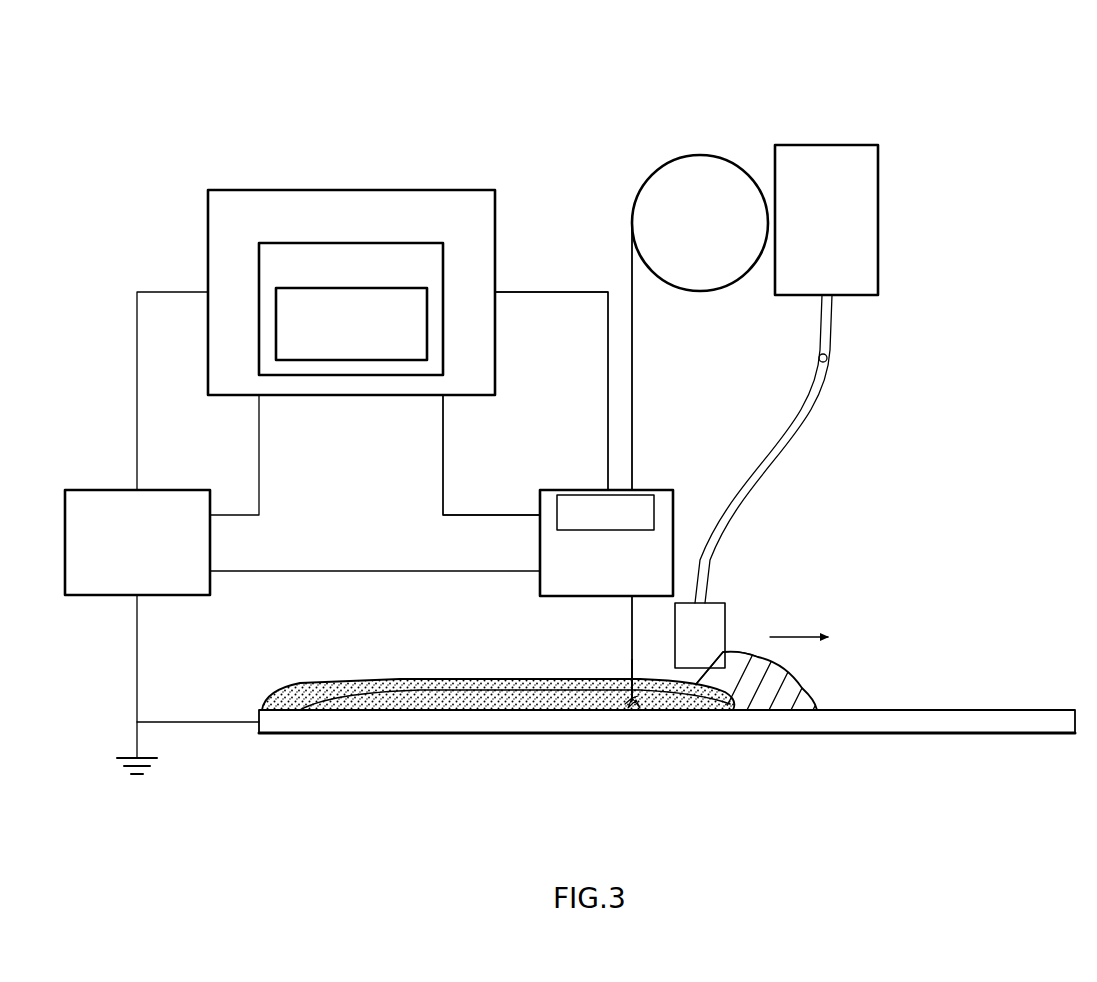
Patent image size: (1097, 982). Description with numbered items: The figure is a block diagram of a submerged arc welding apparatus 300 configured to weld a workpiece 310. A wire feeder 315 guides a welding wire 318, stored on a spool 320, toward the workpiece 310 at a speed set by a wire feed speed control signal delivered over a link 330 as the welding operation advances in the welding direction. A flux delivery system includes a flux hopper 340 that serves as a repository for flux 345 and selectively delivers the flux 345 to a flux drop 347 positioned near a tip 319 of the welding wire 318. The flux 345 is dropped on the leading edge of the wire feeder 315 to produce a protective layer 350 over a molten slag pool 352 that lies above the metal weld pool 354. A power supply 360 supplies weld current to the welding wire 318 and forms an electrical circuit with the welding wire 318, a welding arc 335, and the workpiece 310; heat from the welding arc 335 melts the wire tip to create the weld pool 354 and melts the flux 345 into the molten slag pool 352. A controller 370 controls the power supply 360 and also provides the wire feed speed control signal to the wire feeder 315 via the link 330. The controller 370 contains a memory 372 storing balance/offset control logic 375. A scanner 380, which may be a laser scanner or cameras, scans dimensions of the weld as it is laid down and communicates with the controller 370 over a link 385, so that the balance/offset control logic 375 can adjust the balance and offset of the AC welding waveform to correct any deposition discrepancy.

The apparatus 300 is at (683, 76).
The workpiece 310 is at (308, 733).
The wire feeder 315 is at (658, 490).
The welding wire 318 is at (632, 390).
The tip 319 is at (632, 680).
The spool 320 is at (645, 185).
The link 330 is at (588, 292).
The welding arc 335 is at (639, 728).
The flux hopper 340 is at (878, 180).
The flux 345 is at (832, 358).
The flux drop 347 is at (725, 612).
The protective layer 350 is at (765, 700).
The molten slag pool 352 is at (705, 700).
The weld pool 354 is at (400, 733).
The power supply 360 is at (110, 490).
The controller 370 is at (418, 190).
The memory 372 is at (443, 265).
The balance/offset control logic 375 is at (427, 312).
The scanner 380 is at (575, 497).
The link 385 is at (525, 515).